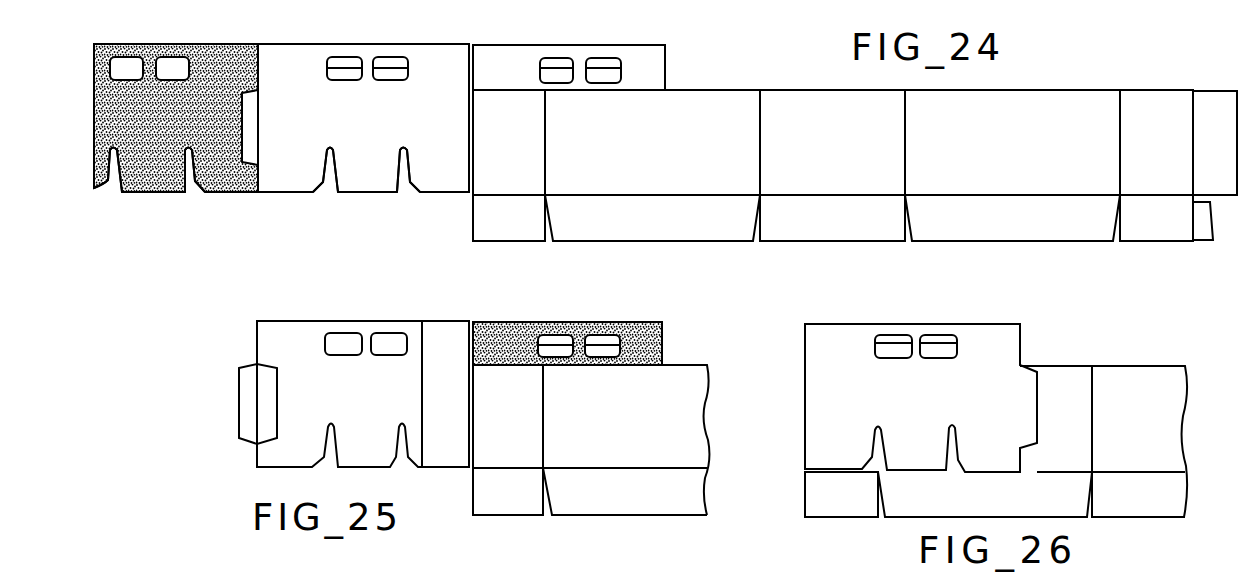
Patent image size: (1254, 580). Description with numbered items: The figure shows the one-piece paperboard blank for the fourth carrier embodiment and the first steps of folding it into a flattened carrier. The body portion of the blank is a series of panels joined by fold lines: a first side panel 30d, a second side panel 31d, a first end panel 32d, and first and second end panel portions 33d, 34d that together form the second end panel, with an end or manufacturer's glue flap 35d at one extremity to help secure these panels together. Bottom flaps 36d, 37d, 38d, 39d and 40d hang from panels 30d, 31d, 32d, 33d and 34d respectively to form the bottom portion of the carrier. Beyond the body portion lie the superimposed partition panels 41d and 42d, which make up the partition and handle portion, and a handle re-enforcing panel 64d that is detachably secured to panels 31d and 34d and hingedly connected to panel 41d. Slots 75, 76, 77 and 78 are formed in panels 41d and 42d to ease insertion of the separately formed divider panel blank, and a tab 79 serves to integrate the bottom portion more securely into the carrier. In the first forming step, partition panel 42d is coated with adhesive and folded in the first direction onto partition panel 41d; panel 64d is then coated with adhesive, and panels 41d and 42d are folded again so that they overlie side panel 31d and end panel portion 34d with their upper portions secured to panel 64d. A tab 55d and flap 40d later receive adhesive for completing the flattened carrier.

In FIG. 24, the first side panel 30d is at (995, 152).
In FIG. 24, the second side panel 31d is at (641, 149).
In FIG. 25, the second side panel 31d is at (603, 424).
In FIG. 26, the second side panel 31d is at (1046, 417).
In FIG. 24, the first end panel 32d is at (813, 149).
In FIG. 26, the first end panel 32d is at (1120, 437).
In FIG. 24, the first end panel portion 33d is at (1142, 169).
In FIG. 24, the second end panel portion 34d is at (492, 149).
In FIG. 25, the second end panel portion 34d is at (493, 452).
In FIG. 24, the glue flap 35d is at (1195, 152).
In FIG. 24, the bottom flap 36d is at (990, 234).
In FIG. 24, the bottom flap 37d is at (632, 231).
In FIG. 25, the bottom flap 37d is at (607, 502).
In FIG. 26, the bottom flap 37d is at (977, 507).
In FIG. 24, the bottom flap 38d is at (813, 231).
In FIG. 26, the bottom flap 38d is at (1123, 507).
In FIG. 24, the bottom flap 39d is at (1140, 234).
In FIG. 24, the bottom flap 40d is at (492, 231).
In FIG. 25, the bottom flap 40d is at (493, 502).
In FIG. 26, the bottom flap 40d is at (830, 507).
In FIG. 24, the partition panel 41d is at (360, 140).
In FIG. 25, the partition panel 41d is at (455, 458).
In FIG. 26, the partition panel 41d is at (905, 404).
In FIG. 24, the partition panel 42d is at (157, 162).
In FIG. 25, the partition panel 42d is at (348, 404).
In FIG. 24, the tab 55d is at (250, 131).
In FIG. 25, the tab 55d is at (248, 437).
In FIG. 24, the handle re-enforcing panel 64d is at (648, 74).
In FIG. 25, the handle re-enforcing panel 64d is at (648, 343).
In FIG. 24, the slot 75 is at (401, 187).
In FIG. 24, the slot 76 is at (323, 188).
In FIG. 24, the slot 77 is at (183, 188).
In FIG. 24, the slot 78 is at (110, 187).
In FIG. 24, the tab 79 is at (1205, 232).